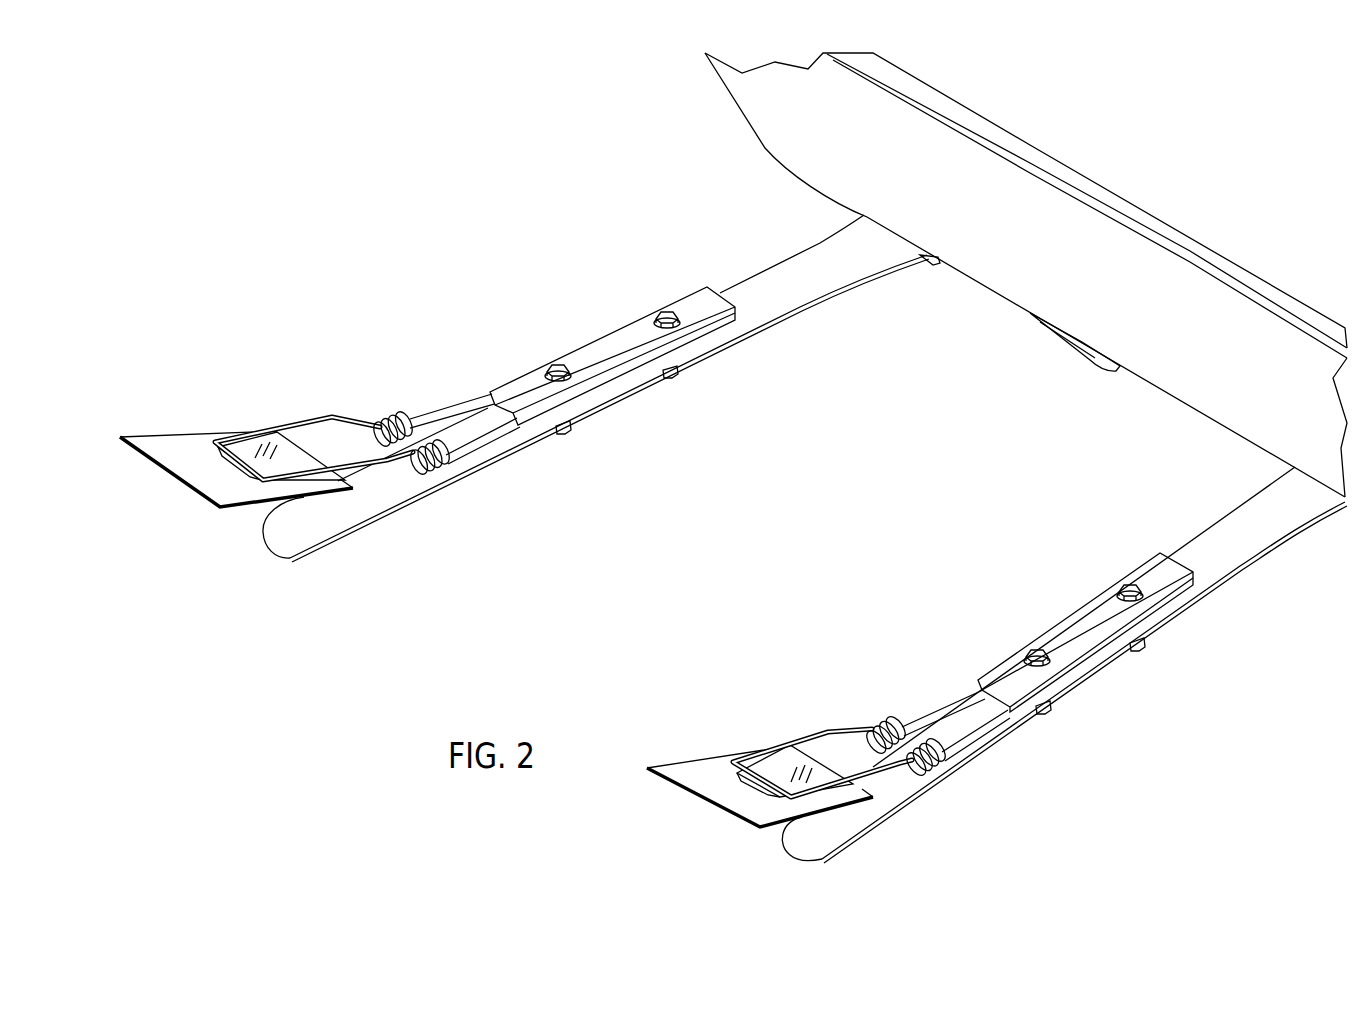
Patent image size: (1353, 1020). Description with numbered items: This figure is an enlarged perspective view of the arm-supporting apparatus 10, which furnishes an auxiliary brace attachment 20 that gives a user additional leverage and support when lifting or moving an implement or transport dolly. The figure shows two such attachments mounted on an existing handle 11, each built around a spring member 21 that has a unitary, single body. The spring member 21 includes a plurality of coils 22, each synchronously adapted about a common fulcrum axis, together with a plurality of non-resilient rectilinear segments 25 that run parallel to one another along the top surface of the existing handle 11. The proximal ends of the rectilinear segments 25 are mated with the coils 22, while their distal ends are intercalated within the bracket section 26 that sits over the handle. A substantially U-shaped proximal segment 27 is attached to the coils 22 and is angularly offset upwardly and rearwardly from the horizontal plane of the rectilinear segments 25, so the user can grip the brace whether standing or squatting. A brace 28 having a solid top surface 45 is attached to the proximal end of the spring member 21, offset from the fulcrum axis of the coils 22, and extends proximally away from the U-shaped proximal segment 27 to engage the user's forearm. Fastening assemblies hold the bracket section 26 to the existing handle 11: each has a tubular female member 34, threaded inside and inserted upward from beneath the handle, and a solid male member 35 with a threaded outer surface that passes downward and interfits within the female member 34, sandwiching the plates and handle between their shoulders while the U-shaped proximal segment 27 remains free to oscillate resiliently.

The arm-supporting apparatus 10 is at (222, 208).
The existing handle 11 is at (307, 527).
The auxiliary brace attachment 20 is at (469, 222).
The spring member 21 is at (668, 572).
The coils 22 is at (380, 414).
The non-resilient rectilinear segments 25 is at (446, 410).
The bracket section 26 is at (602, 320).
The U-shaped proximal segment 27 is at (279, 425).
The brace 28 is at (155, 412).
The tubular female member 34 is at (667, 388).
The solid male member 35 is at (545, 355).
The top surface 45 is at (185, 450).